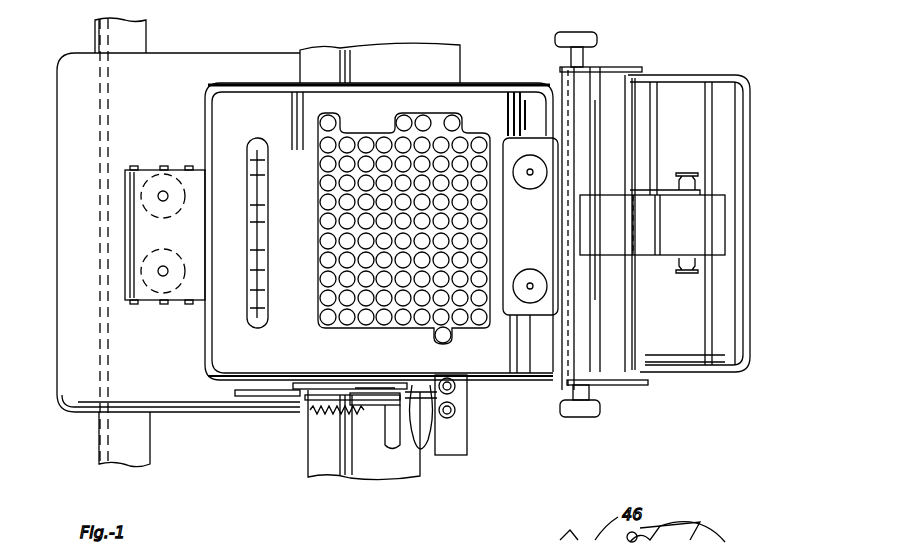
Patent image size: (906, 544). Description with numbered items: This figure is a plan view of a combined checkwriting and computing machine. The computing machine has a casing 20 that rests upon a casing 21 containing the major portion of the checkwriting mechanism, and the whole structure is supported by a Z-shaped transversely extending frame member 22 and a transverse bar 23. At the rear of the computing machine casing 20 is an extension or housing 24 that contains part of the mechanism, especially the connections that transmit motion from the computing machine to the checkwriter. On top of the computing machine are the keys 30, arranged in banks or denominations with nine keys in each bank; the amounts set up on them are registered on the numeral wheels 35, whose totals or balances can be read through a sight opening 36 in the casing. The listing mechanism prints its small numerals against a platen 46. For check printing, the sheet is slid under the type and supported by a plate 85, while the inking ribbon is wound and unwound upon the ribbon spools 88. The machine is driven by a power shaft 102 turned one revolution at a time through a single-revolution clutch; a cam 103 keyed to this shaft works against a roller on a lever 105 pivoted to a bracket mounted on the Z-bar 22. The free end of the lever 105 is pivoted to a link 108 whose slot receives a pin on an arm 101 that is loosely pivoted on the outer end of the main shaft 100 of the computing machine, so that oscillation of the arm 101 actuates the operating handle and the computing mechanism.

The supporting plate 85 is at (168, 62).
The transverse bar 23 is at (113, 442).
The computing machine casing 20 is at (379, 227).
The checkwriter casing 21 is at (228, 381).
The link 108 is at (272, 397).
The ribbon spools 88 is at (172, 262).
The sight opening 36 is at (250, 282).
The numeral wheels 35 is at (250, 224).
The keys 30 is at (366, 138).
The housing 24 is at (626, 224).
The platen 46 is at (585, 100).
The arm 101 is at (334, 382).
The main shaft 100 is at (378, 384).
The cam 103 is at (362, 406).
The power shaft 102 is at (390, 442).
The lever 105 is at (417, 446).
The Z-shaped frame member 22 is at (450, 440).